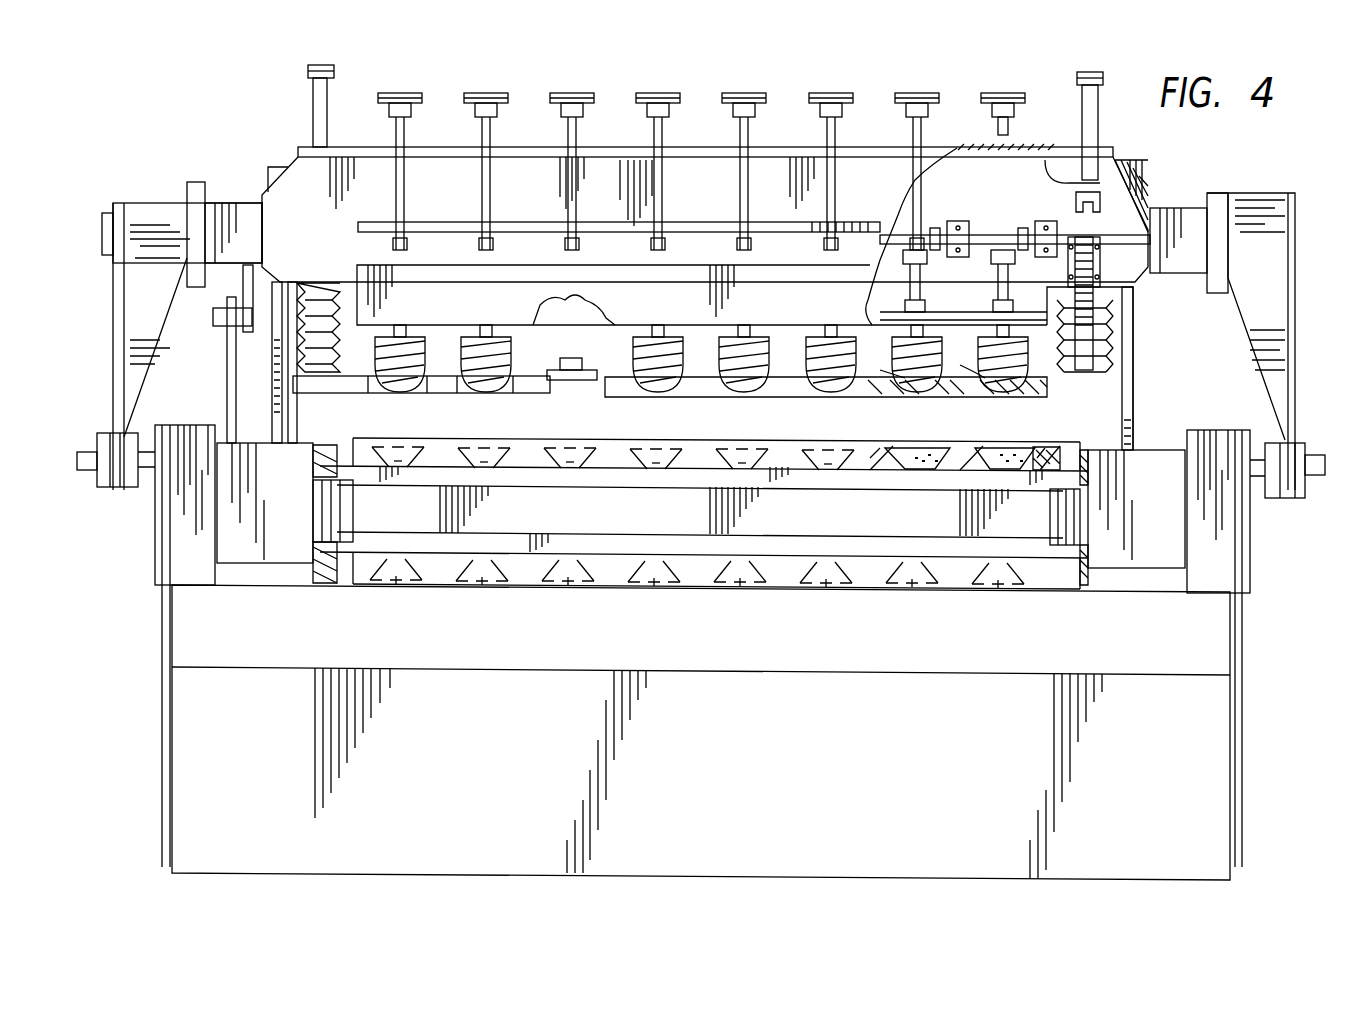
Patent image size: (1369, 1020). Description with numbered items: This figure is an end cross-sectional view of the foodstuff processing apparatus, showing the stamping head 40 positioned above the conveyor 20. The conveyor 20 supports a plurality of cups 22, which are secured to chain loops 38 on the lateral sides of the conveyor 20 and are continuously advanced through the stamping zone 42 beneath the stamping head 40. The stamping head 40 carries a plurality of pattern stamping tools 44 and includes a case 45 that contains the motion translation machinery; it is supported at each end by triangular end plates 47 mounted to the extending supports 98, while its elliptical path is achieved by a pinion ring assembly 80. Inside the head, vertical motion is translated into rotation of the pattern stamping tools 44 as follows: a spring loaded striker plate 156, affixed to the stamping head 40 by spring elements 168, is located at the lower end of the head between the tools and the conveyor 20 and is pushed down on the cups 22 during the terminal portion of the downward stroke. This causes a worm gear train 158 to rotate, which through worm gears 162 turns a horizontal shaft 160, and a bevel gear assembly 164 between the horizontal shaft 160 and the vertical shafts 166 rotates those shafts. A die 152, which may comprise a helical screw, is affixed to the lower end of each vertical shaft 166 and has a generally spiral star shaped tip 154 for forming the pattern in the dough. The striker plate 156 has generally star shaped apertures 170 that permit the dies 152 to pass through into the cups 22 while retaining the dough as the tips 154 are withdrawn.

The conveyor 20 is at (335, 590).
The cups 22 is at (478, 445).
The chain loop 38 is at (313, 472).
The stamping head 40 is at (298, 185).
The stamping zone 42 is at (1062, 445).
The pattern stamping tools 44 is at (478, 332).
The case 45 is at (608, 184).
The end plates 47 is at (116, 342).
The pinion ring assembly 80 is at (148, 478).
The extending support 98 is at (80, 458).
The die 152 is at (868, 375).
The spiral star shaped tip 154 is at (905, 390).
The striker plate 156 is at (318, 388).
The worm gear train 158 is at (1110, 325).
The horizontal shaft 160 is at (990, 234).
The worm gears 162 is at (1122, 218).
The bevel gear assembly 164 is at (932, 235).
The vertical shafts 166 is at (998, 290).
The spring elements 168 is at (1115, 352).
The apertures 170 is at (1025, 400).